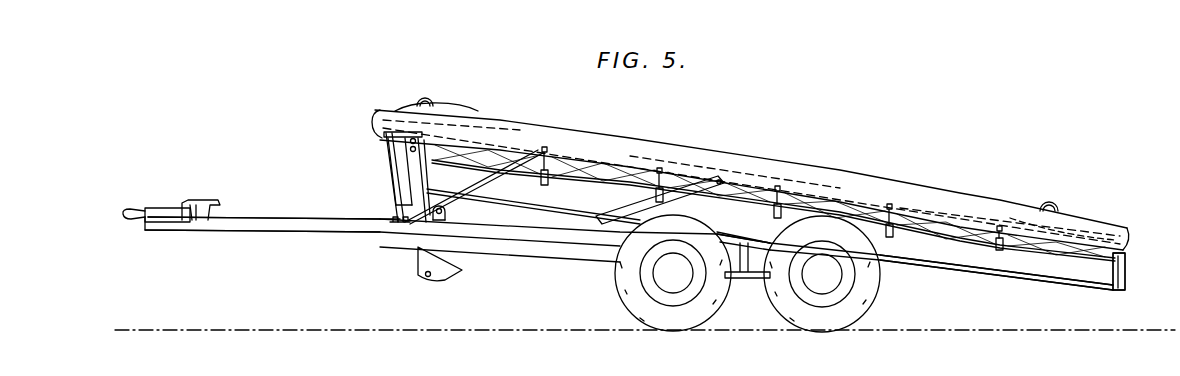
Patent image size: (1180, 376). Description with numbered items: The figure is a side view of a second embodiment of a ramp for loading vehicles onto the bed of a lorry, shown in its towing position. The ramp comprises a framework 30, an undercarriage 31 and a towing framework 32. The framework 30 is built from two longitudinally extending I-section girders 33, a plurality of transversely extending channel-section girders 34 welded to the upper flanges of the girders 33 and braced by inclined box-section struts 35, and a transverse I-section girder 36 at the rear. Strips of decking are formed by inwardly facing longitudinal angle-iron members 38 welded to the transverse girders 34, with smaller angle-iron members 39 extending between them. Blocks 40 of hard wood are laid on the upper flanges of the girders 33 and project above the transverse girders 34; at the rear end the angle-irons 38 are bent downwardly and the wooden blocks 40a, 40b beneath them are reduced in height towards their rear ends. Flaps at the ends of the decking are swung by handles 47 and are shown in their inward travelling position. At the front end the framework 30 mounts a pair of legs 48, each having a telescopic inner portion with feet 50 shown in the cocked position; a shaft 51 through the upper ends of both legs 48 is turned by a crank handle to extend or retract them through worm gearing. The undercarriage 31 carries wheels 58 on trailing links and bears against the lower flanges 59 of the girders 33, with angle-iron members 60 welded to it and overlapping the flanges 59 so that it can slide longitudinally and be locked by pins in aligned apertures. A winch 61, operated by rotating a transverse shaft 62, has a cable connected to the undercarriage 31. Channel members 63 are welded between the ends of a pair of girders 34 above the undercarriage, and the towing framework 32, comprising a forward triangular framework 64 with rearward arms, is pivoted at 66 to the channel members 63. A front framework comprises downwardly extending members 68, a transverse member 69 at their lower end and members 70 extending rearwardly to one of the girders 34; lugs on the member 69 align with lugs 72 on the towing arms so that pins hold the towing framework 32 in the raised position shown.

The framework 30 is at (856, 148).
The undercarriage 31 is at (753, 313).
The towing framework 32 is at (265, 250).
The longitudinally extending I-section girders 33 is at (952, 262).
The transversely extending channel-section girders 34 is at (388, 150).
The inclined box-section struts 35 is at (545, 186).
The transverse I-section girder 36 is at (1128, 276).
The longitudinally extending angle-iron members 38 is at (488, 121).
The smaller section angle-iron members 39 is at (700, 152).
The blocks of hard wood 40 is at (480, 160).
The wooden block 40a is at (968, 229).
The wooden block 40b is at (1038, 237).
The handles 47 is at (428, 100).
The legs 48 is at (405, 186).
The feet 50 is at (420, 288).
The shaft 51 is at (415, 172).
The wheels 58 is at (630, 306).
The lower flanges 59 is at (978, 279).
The angle-iron members 60 is at (753, 237).
The winch 61 is at (446, 208).
The transverse shaft 62 is at (447, 216).
The longitudinally extending channel members 63 is at (760, 188).
The forward triangular shaped framework 64 is at (259, 222).
The pivots 66 is at (720, 173).
The downwardly extending members 68 is at (394, 205).
The transversely extending member 69 is at (398, 233).
The members 70 is at (486, 181).
The lugs 72 is at (385, 228).